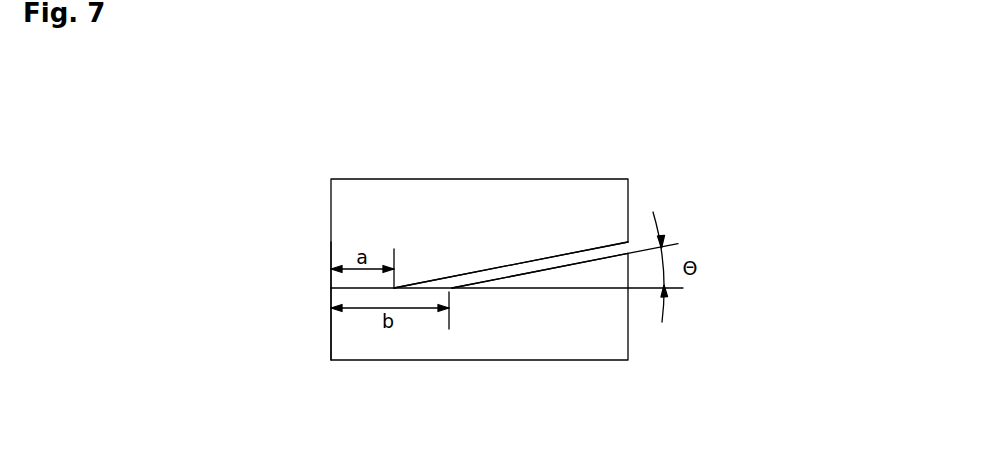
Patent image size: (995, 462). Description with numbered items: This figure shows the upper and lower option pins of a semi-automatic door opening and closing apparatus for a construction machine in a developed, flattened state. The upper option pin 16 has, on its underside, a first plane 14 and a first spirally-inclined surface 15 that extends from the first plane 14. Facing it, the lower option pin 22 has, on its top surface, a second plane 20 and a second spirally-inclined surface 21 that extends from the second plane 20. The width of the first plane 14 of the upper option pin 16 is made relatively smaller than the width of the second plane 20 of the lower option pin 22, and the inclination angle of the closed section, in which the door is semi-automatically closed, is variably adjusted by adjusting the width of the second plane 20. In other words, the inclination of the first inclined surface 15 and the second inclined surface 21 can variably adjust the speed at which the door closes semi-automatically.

The first plane 14 is at (355, 289).
The first spirally-inclined surface 15 is at (556, 259).
The upper option pin 16 is at (613, 197).
The second plane 20 is at (428, 286).
The second spirally-inclined surface 21 is at (570, 268).
The lower option pin 22 is at (612, 334).